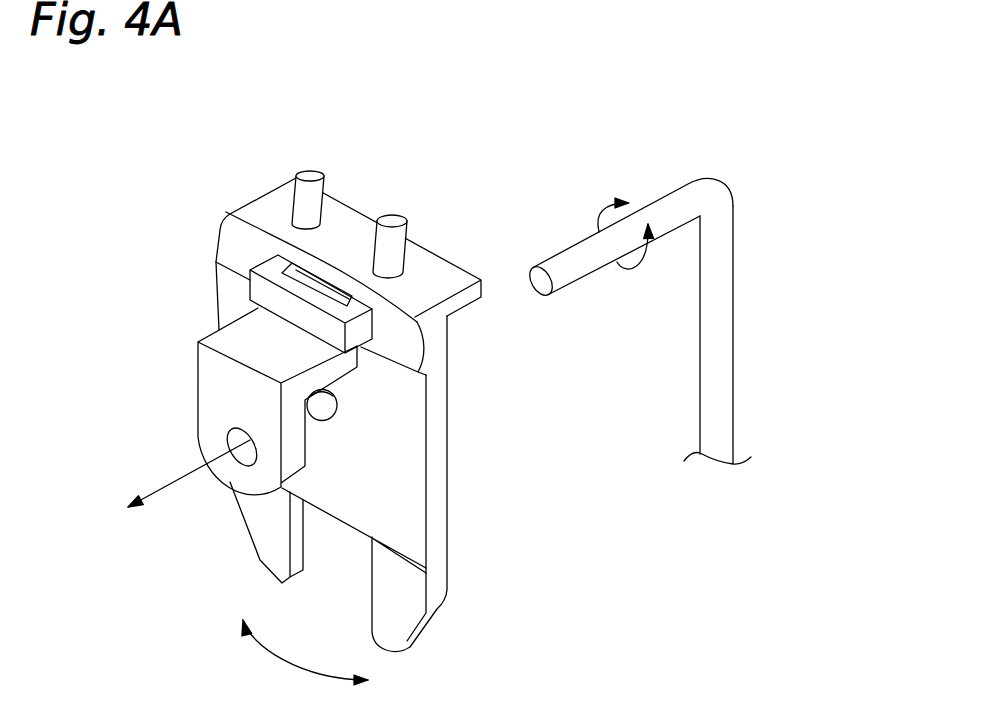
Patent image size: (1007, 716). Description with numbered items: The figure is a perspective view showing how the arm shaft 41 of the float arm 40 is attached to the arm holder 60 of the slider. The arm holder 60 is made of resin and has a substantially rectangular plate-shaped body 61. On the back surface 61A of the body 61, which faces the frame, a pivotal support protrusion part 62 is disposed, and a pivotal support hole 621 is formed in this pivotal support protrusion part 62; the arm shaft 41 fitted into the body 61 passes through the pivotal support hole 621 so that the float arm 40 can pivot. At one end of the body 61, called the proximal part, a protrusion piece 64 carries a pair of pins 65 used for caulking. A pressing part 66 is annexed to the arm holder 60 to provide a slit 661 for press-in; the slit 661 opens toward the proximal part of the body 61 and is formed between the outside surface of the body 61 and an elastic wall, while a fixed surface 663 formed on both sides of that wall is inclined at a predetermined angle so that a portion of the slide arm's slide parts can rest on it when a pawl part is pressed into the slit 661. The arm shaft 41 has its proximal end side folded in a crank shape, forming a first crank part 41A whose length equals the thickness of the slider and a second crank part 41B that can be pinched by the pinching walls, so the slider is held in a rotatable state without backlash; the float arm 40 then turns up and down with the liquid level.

The float arm 40 is at (702, 268).
The arm shaft 41 is at (702, 268).
The first crank part 41A is at (677, 207).
The second crank part 41B is at (718, 370).
The arm holder 60 is at (318, 362).
The body 61 is at (435, 534).
The back surface 61A is at (367, 498).
The pivotal support protrusion part 62 is at (217, 410).
The pivotal support hole 621 is at (229, 463).
The protrusion piece 64 is at (432, 273).
The pins 65 is at (391, 220).
The pressing part 66 is at (262, 287).
The slit 661 is at (316, 283).
The fixed surface 663 is at (402, 340).